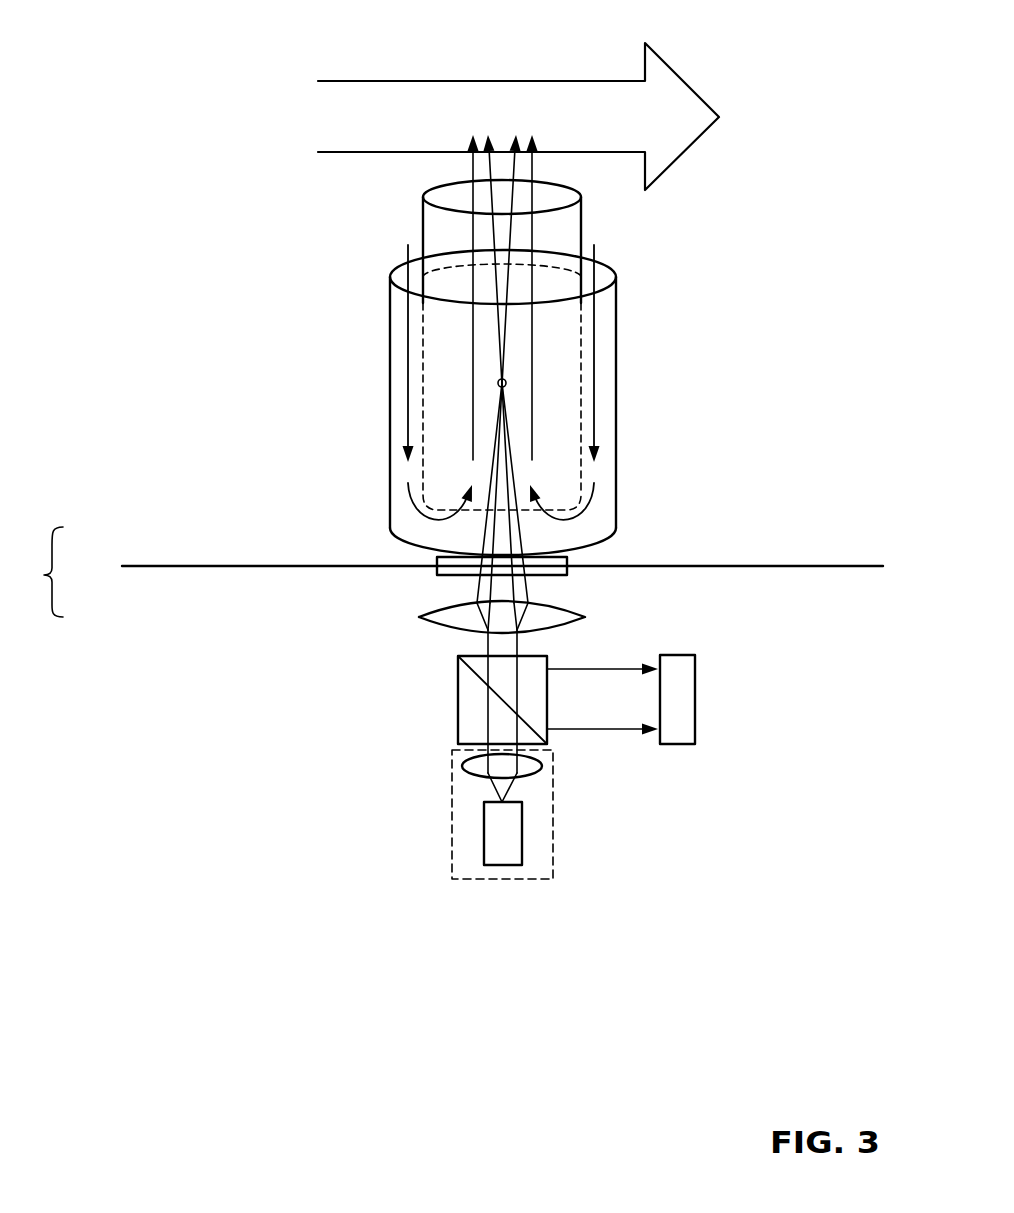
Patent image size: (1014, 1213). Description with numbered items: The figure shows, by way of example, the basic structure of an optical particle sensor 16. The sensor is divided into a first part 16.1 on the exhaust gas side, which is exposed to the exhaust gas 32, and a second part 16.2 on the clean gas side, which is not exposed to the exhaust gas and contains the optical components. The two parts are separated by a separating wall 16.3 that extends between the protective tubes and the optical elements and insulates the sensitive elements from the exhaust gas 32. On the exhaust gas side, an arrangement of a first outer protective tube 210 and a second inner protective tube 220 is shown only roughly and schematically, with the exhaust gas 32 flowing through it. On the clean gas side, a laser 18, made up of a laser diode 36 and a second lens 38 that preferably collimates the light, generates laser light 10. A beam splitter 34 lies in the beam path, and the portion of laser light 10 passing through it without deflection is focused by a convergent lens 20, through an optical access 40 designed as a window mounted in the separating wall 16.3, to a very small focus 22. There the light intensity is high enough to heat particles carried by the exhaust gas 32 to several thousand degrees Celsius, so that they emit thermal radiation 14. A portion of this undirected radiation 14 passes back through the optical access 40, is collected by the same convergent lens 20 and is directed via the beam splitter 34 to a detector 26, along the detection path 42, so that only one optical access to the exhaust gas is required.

The laser light 10 is at (500, 641).
The radiation 14 is at (523, 642).
The particle sensor 16 is at (40, 579).
The first part 16.1 is at (255, 470).
The second part 16.2 is at (255, 677).
The separating wall 16.3 is at (793, 556).
The laser 18 is at (420, 824).
The convergent lens 20 is at (555, 615).
The focus 22 is at (522, 381).
The detector 26 is at (678, 746).
The exhaust gas 32 is at (485, 81).
The beam splitter 34 is at (420, 690).
The laser diode 36 is at (508, 852).
The second lens 38 is at (475, 767).
The optical access 40 is at (558, 569).
The detection beam 42 is at (640, 652).
The first outer protective tube 210 is at (616, 298).
The second inner protective tube 220 is at (582, 225).